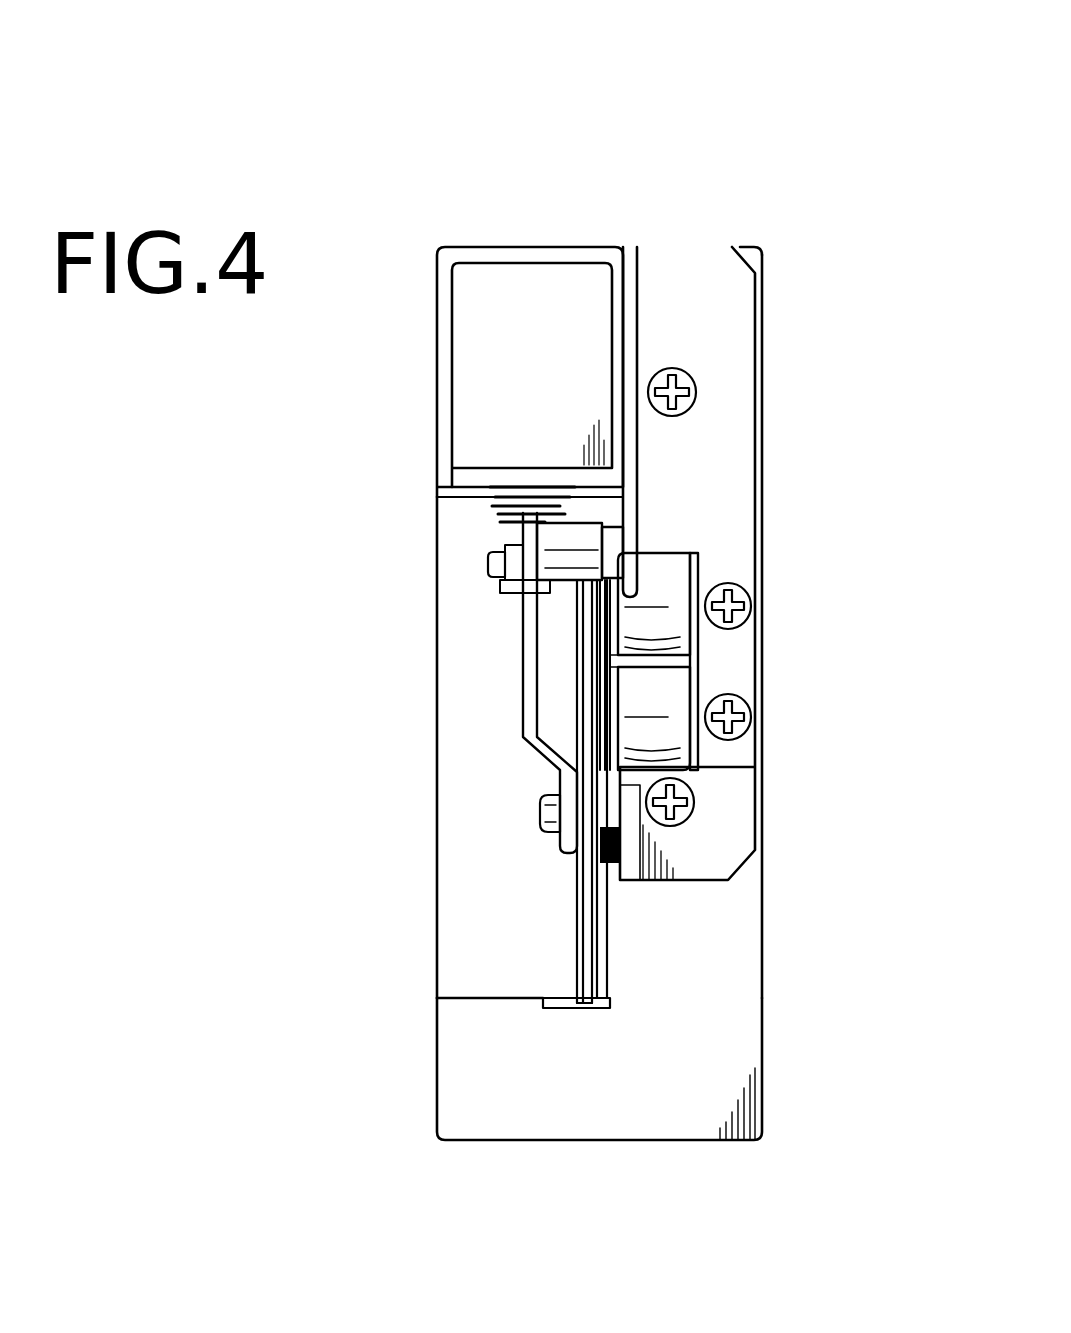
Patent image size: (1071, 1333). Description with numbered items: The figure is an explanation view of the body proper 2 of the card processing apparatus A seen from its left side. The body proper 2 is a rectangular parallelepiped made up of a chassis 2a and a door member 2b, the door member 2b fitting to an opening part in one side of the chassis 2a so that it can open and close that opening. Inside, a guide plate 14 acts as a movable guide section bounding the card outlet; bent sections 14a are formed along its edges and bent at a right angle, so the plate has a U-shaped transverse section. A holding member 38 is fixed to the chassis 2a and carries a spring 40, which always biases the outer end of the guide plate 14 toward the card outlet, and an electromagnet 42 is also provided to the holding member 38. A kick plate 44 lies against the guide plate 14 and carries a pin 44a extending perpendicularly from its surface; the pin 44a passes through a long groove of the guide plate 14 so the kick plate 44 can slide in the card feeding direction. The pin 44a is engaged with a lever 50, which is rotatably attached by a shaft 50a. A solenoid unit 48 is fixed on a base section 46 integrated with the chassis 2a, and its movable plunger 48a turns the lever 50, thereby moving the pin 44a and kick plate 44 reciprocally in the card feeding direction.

The card processing apparatus A is at (351, 142).
The body proper 2 is at (487, 693).
The chassis 2a is at (470, 1077).
The door member 2b is at (467, 957).
The guide plate 14 is at (577, 920).
The bent section 14a is at (597, 1008).
The holding member 38 is at (733, 815).
The spring 40 is at (613, 865).
The electromagnet 42 is at (660, 712).
The kick plate 44 is at (587, 778).
The pin 44a is at (540, 808).
The base section 46 is at (764, 422).
The solenoid unit 48 is at (520, 310).
The movable plunger 48a is at (487, 567).
The lever 50 is at (530, 668).
The shaft 50a is at (577, 540).